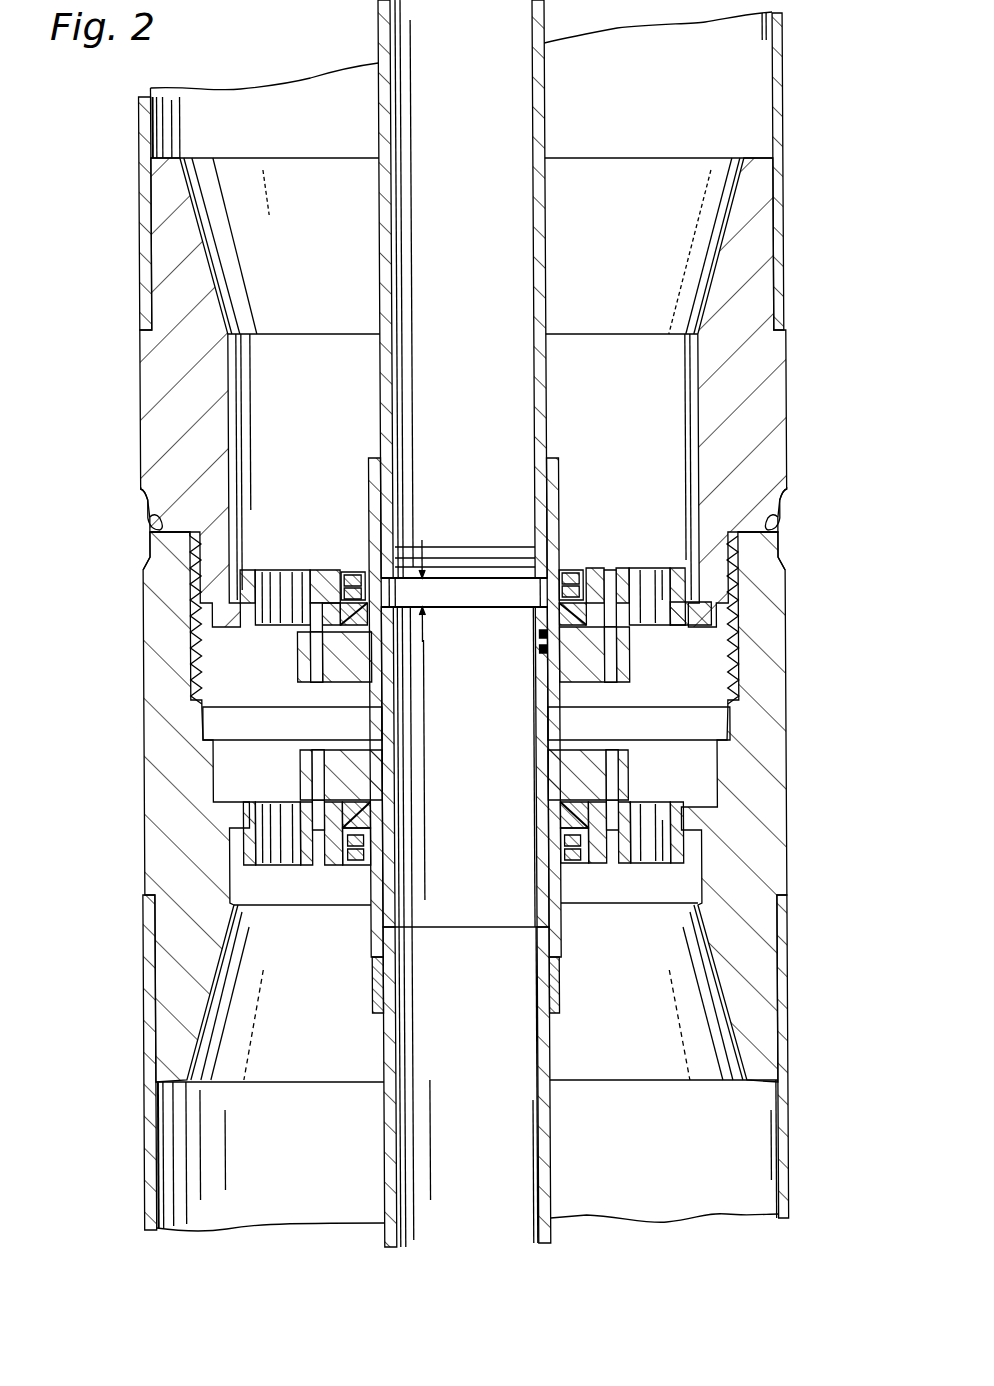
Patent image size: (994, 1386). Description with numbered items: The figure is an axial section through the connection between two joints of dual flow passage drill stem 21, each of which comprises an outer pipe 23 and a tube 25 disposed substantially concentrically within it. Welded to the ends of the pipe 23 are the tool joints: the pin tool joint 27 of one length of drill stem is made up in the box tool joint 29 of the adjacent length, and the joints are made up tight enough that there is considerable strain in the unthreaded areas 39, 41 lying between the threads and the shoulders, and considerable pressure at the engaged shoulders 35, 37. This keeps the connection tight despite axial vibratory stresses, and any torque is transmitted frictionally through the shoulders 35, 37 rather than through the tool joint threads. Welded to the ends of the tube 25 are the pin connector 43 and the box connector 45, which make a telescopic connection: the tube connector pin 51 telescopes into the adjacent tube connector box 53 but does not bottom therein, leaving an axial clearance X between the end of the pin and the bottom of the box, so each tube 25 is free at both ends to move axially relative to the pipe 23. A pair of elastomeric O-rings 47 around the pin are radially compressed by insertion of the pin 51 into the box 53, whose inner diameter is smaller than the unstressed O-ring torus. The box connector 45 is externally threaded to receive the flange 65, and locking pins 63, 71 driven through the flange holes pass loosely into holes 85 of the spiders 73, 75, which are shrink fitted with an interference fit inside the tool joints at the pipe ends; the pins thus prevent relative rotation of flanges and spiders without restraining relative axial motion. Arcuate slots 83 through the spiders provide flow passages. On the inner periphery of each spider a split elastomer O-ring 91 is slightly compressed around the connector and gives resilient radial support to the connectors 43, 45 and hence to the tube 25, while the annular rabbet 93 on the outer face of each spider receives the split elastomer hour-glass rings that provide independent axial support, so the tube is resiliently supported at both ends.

The dual flow passage drill stem 21 is at (133, 124).
The pipe 23 is at (784, 70).
The tube 25 is at (376, 18).
The pin tool joint 27 is at (144, 412).
The box tool joint 29 is at (141, 827).
The shoulder 35 is at (152, 535).
The shoulder 37 is at (147, 522).
The unthreaded area 39 is at (751, 554).
The unthreaded area 41 is at (739, 537).
The pin connector 43 is at (626, 781).
The box connector 45 is at (556, 478).
The O-rings 47 is at (536, 634).
The pin 51 is at (535, 699).
The box 53 is at (535, 598).
The locking pins 63 is at (605, 757).
The flange 65 is at (293, 663).
The locking pins 71 is at (607, 669).
The spider 73 is at (706, 818).
The spider 75 is at (703, 616).
The arcuate slots 83 is at (647, 578).
The holes 85 is at (606, 571).
The split elastomer O-ring 91 is at (357, 575).
The annular rabbet 93 is at (350, 576).